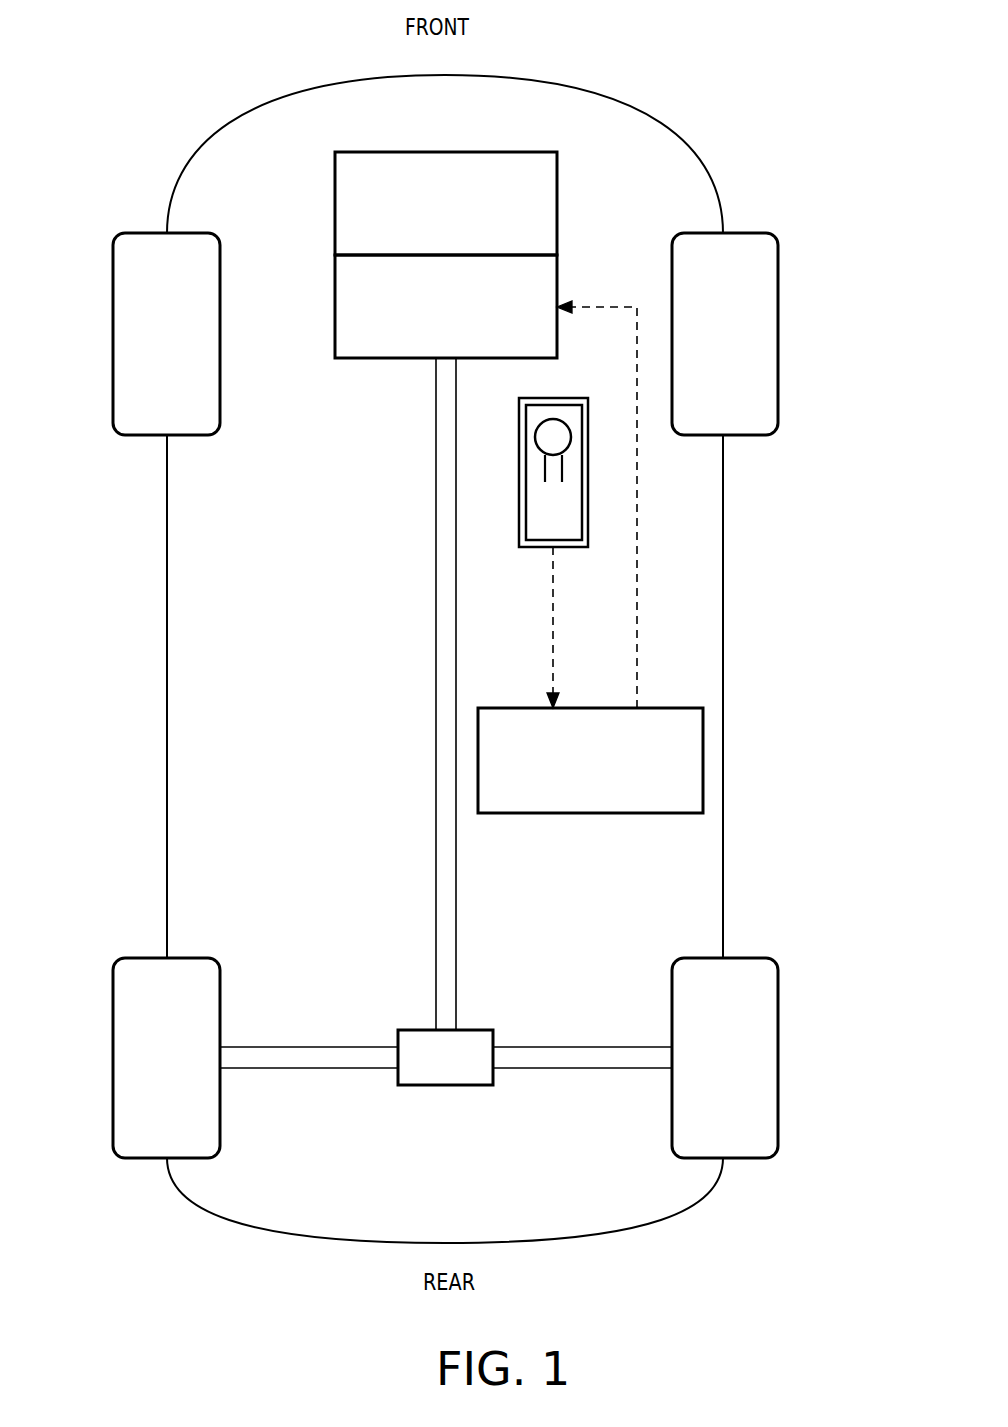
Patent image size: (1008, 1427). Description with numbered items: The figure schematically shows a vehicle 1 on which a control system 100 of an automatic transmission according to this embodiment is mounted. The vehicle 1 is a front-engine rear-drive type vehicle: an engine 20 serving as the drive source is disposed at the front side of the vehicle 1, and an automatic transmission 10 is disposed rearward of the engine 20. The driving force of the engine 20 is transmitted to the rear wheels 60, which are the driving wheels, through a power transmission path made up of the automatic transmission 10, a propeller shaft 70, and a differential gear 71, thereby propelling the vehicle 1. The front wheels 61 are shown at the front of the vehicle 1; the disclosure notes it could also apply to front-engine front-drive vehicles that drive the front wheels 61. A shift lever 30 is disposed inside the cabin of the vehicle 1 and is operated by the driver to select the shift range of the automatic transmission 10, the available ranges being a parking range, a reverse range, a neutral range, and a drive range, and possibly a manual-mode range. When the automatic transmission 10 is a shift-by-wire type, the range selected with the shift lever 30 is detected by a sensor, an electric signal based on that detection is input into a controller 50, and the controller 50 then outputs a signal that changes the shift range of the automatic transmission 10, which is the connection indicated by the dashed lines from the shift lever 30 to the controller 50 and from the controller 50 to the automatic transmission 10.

The vehicle 1 is at (722, 113).
The control system 100 is at (835, 463).
The automatic transmission 10 is at (335, 303).
The engine 20 is at (335, 203).
The shift lever 30 is at (588, 493).
The controller 50 is at (592, 813).
The rear wheels 60 is at (113, 1058).
The front wheels 61 is at (113, 340).
The propeller shaft 70 is at (436, 712).
The differential gear 71 is at (446, 1085).